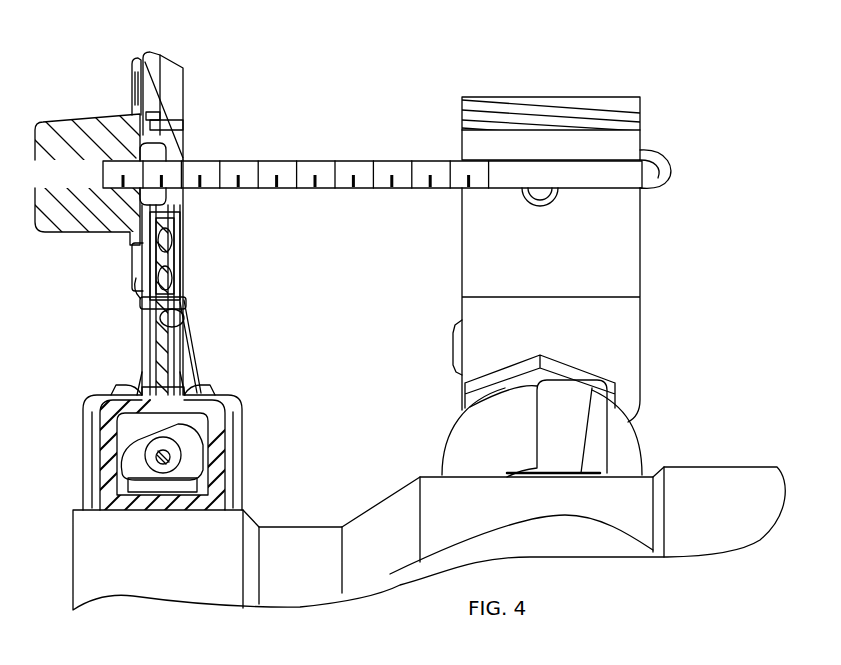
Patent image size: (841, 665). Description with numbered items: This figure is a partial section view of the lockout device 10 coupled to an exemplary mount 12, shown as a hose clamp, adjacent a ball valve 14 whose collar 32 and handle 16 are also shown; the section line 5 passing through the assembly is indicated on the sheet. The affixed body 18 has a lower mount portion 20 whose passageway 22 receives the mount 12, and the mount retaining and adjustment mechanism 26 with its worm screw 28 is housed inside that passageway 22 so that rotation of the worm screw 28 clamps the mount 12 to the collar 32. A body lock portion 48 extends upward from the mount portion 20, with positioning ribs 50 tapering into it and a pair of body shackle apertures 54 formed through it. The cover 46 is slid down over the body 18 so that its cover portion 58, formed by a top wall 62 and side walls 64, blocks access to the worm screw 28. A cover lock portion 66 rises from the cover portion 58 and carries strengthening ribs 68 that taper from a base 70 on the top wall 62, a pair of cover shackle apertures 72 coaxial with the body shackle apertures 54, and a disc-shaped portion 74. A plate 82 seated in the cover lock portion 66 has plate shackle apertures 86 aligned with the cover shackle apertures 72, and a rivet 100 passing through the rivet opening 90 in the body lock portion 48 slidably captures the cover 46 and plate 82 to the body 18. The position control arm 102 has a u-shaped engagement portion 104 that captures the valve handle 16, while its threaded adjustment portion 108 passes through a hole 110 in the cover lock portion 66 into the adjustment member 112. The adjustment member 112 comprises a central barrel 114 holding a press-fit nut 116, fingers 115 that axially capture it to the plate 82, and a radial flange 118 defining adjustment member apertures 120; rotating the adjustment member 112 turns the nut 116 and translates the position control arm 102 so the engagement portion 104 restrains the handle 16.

The section line 5- 5 is at (141, 8).
The lockout device 10 is at (718, 68).
The mount 12 is at (160, 498).
The ball valve 14 is at (654, 472).
The handle 16 is at (612, 97).
The affixed body 18 is at (112, 506).
The lower mount portion 20 is at (195, 506).
The passageway 22 is at (135, 437).
The mount retaining and adjustment mechanism 26 is at (193, 442).
The worm screw 28 is at (150, 480).
The collar 32 is at (72, 548).
The cover 46 is at (180, 68).
The body lock portion 48 is at (152, 349).
The positioning ribs 50 is at (141, 380).
The body shackle apertures 54 is at (168, 258).
The cover portion 58 is at (244, 412).
The top wall 62 is at (238, 405).
The side walls 64 is at (83, 450).
The cover lock portion 66 is at (186, 131).
The strengthening ribs 68 is at (196, 352).
The base 70 is at (196, 392).
The cover shackle apertures 72 is at (178, 260).
The disc-shaped portion 74 is at (152, 56).
The plate 82 is at (140, 325).
The plate shackle apertures 86 is at (137, 278).
The rivet opening 90 is at (182, 310).
The rivet 100 is at (186, 302).
The position control arm 102 is at (388, 158).
The u-shaped engagement portion 104 is at (664, 180).
The adjustment portion 108 is at (312, 160).
The hole 110 is at (180, 160).
The adjustment member 112 is at (38, 125).
The central barrel 114 is at (99, 229).
The fingers 115 is at (160, 122).
The nut 116 is at (120, 128).
The radial flange 118 is at (133, 62).
The adjustment member apertures 120 is at (131, 261).